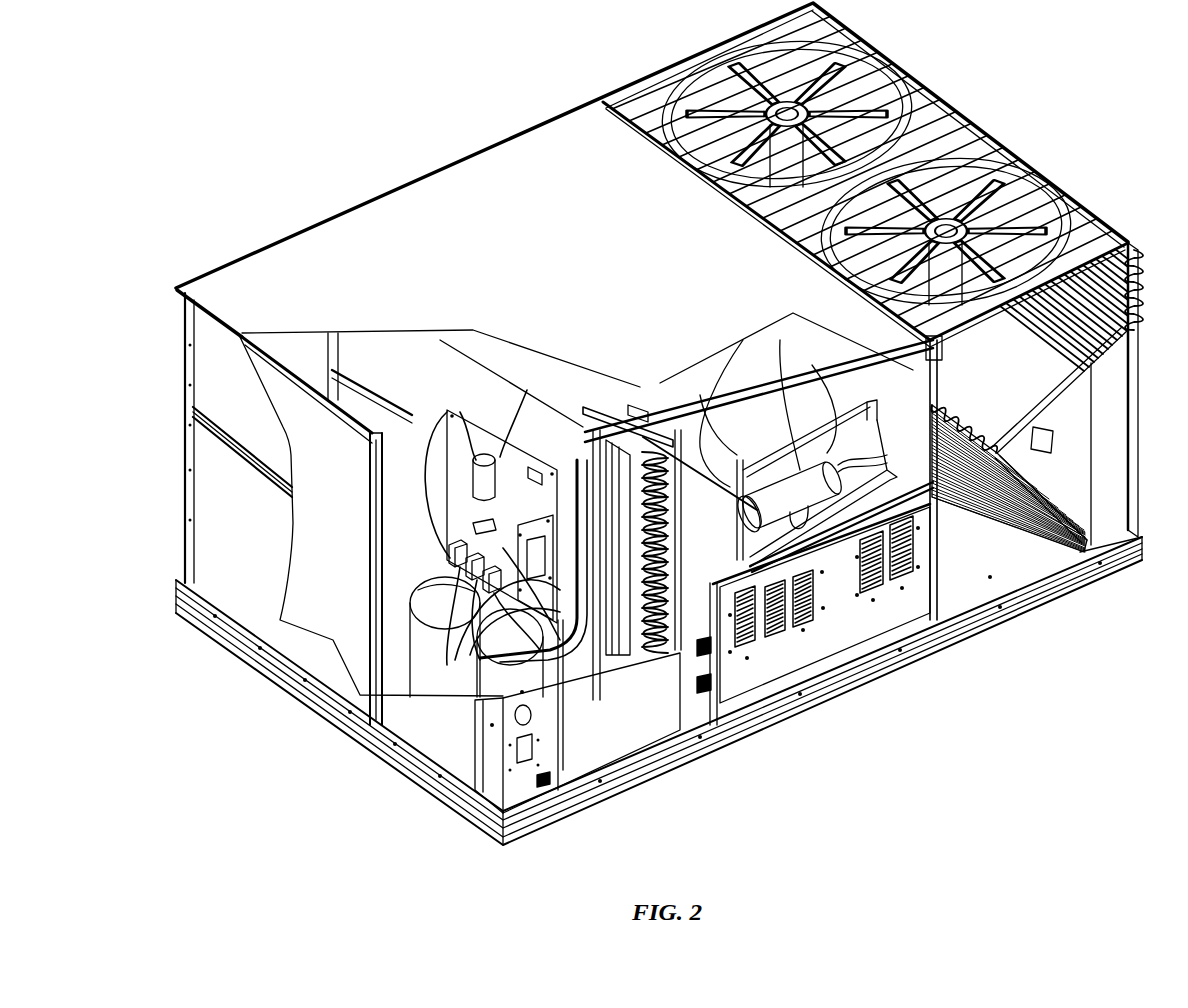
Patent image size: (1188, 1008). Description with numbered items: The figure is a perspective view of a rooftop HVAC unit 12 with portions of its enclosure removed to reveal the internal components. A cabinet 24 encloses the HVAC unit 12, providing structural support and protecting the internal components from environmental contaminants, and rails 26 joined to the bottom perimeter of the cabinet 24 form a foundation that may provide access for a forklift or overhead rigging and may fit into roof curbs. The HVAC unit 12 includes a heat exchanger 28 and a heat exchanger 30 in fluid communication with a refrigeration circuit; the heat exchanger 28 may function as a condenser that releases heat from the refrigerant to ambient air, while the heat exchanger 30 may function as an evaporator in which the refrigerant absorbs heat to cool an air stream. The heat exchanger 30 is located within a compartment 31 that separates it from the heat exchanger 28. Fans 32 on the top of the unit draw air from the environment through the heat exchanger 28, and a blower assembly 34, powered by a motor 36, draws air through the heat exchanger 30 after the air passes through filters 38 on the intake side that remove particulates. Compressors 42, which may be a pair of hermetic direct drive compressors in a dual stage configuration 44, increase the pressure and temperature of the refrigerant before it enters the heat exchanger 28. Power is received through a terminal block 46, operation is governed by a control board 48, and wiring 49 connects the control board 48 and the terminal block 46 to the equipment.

The HVAC unit 12 is at (386, 150).
The cabinet 24 is at (228, 545).
The rails 26 is at (252, 662).
The heat exchanger 28 is at (1128, 288).
The heat exchanger 30 is at (660, 650).
The compartment 31 is at (700, 410).
The fans 32 is at (958, 217).
The blower assembly 34 is at (800, 485).
The motor 36 is at (790, 400).
The filters 38 is at (620, 467).
The compressors 42 is at (417, 657).
The dual stage configuration 44 is at (415, 592).
The terminal block 46 is at (480, 525).
The control board 48 is at (535, 465).
The wiring 49 is at (637, 407).